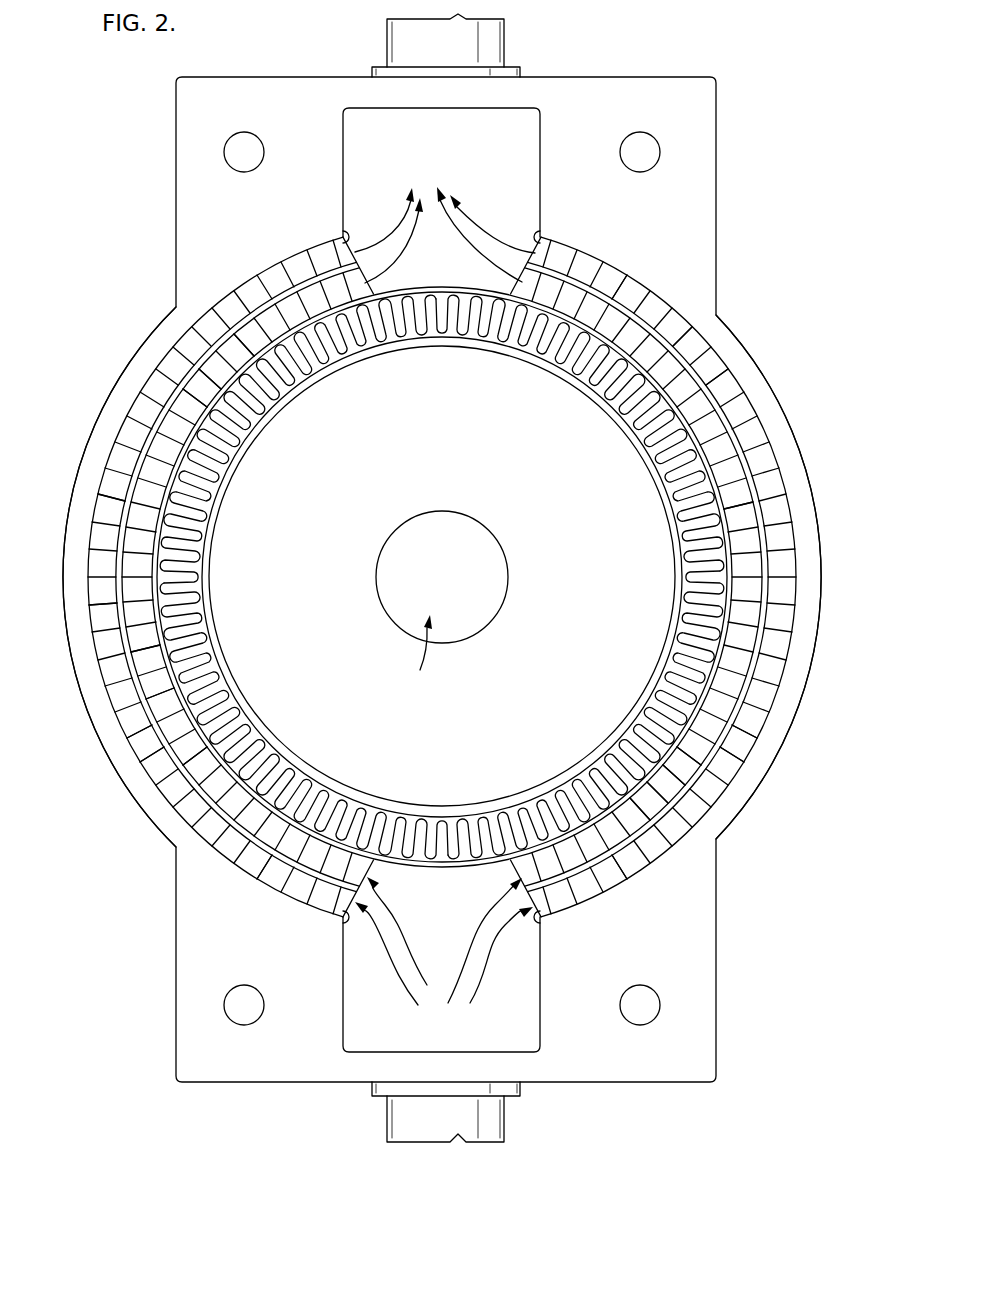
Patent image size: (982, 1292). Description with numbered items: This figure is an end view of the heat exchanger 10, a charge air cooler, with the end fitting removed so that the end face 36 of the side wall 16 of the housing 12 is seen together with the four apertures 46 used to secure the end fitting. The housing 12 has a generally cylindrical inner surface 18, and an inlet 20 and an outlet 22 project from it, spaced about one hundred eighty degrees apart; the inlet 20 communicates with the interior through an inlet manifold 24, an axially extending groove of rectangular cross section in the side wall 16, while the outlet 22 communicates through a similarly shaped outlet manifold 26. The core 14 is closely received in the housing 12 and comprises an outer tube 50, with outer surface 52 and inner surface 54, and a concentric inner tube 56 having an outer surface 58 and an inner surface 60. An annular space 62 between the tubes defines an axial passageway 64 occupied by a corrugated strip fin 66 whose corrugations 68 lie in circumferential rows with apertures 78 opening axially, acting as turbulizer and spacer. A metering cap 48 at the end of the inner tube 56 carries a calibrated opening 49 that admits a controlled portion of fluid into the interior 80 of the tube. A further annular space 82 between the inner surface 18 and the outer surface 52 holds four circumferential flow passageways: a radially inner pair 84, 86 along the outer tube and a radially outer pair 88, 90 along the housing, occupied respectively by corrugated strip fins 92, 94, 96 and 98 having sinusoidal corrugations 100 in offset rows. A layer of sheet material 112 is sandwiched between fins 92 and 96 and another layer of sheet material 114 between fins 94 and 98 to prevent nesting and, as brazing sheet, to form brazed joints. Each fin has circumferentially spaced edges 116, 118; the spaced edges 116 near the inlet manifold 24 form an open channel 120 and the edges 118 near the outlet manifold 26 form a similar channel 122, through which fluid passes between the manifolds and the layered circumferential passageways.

The heat exchanger 10 is at (150, 178).
The housing 12 is at (755, 337).
The core 14 is at (232, 598).
The side wall 16 is at (108, 392).
The inner surface 18 is at (110, 477).
The inlet 20 is at (505, 1118).
The outlet 22 is at (505, 35).
The inlet manifold 24 is at (366, 1023).
The outlet manifold 26 is at (412, 155).
The end face 36 is at (716, 203).
The apertures 46 is at (245, 143).
The metering cap 48 is at (690, 405).
The calibrated opening 49 is at (417, 655).
The outer tube 50 is at (623, 478).
The outer surface 52 is at (752, 642).
The inner surface 54 is at (670, 688).
The inner tube 56 is at (623, 737).
The outer surface 58 is at (647, 772).
The inner surface 60 is at (600, 782).
The annular space 62 is at (733, 380).
The passageway 64 is at (197, 687).
The corrugated strip fin 66 is at (166, 645).
The corrugations 68 is at (207, 453).
The apertures 78 is at (213, 358).
The interior 80 is at (428, 565).
The annular space 82 is at (158, 772).
The circumferential fluid flow passageway 84 is at (195, 345).
The circumferential fluid flow passageway 86 is at (705, 325).
The circumferential fluid flow passageway 88 is at (258, 286).
The circumferential fluid flow passageway 90 is at (607, 270).
The corrugated strip fin 92 is at (202, 773).
The corrugated strip fin 94 is at (725, 718).
The corrugated strip fin 96 is at (283, 878).
The corrugated strip fin 98 is at (578, 890).
The corrugations 100 is at (145, 748).
The layer of sheet material 112 is at (95, 608).
The layer of sheet material 114 is at (663, 418).
The edges 116 is at (343, 917).
The edges 118 is at (343, 237).
The open channel 120 is at (421, 906).
The channel 122 is at (457, 280).